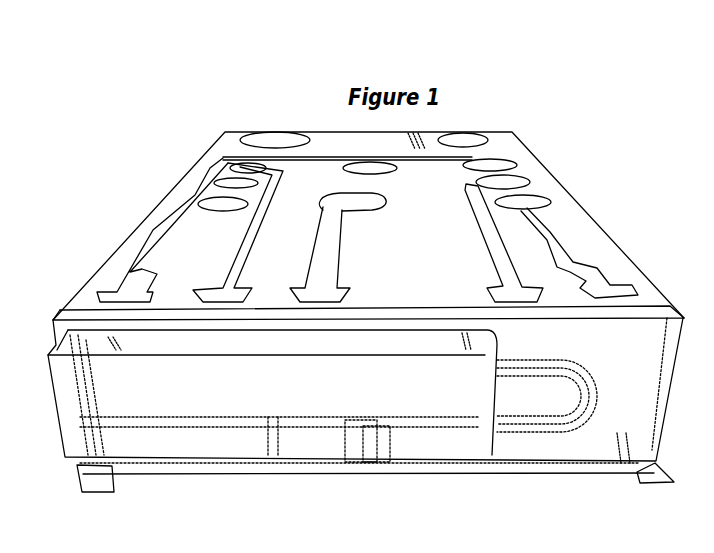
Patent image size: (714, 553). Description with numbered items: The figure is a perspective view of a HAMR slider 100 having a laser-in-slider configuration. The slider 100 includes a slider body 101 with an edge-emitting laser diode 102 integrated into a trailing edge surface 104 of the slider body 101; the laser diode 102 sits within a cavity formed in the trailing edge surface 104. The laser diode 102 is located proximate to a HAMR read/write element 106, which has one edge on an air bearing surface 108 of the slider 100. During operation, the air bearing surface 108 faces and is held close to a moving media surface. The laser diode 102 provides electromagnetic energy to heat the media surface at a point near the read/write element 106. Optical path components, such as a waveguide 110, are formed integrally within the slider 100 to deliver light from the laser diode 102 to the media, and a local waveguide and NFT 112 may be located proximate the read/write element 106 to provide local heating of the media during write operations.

The slider 100 is at (594, 153).
The slider body 101 is at (97, 277).
The edge-emitting laser diode 102 is at (75, 431).
The trailing edge surface 104 is at (100, 492).
The HAMR read/write element 106 is at (377, 460).
The air bearing surface 108 is at (664, 483).
The waveguide 110 is at (546, 432).
The local waveguide and NFT 112 is at (367, 462).